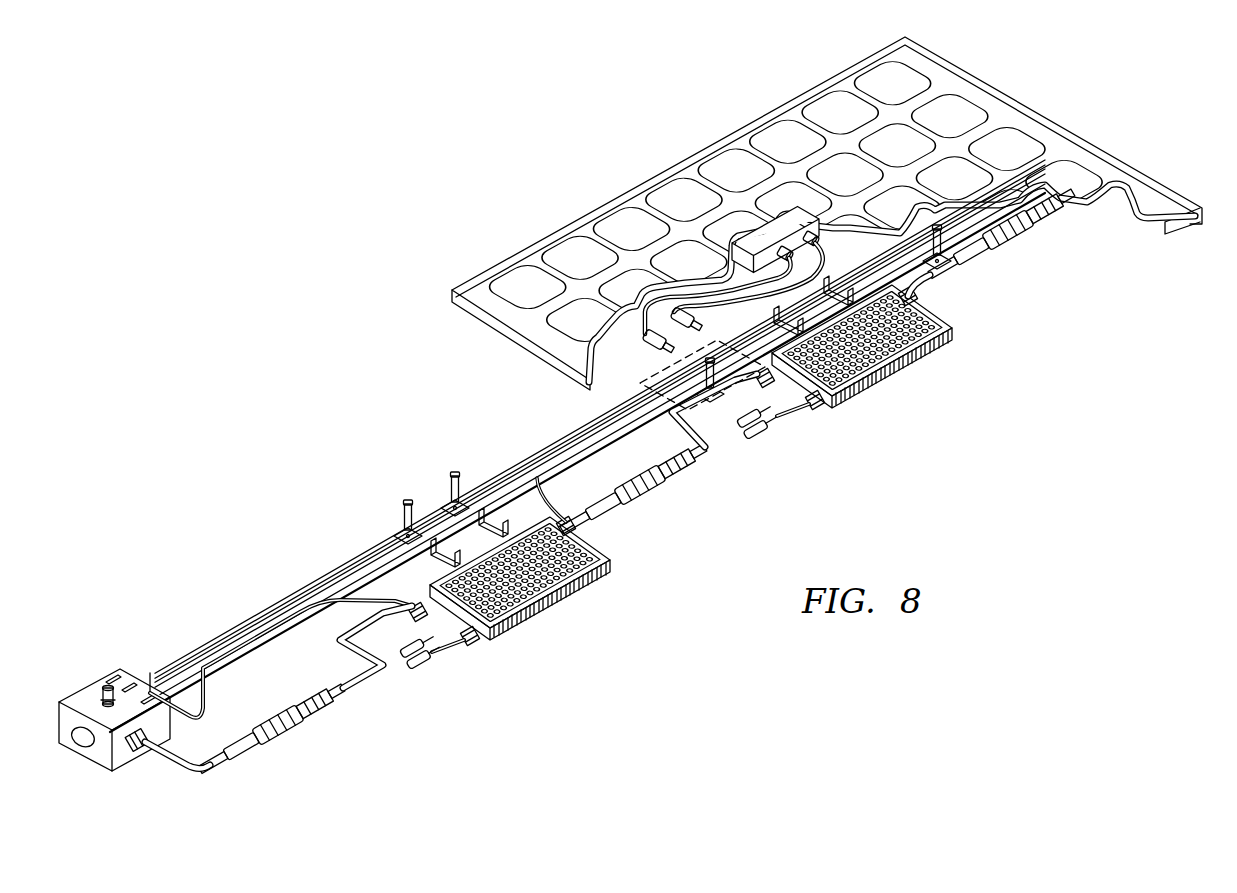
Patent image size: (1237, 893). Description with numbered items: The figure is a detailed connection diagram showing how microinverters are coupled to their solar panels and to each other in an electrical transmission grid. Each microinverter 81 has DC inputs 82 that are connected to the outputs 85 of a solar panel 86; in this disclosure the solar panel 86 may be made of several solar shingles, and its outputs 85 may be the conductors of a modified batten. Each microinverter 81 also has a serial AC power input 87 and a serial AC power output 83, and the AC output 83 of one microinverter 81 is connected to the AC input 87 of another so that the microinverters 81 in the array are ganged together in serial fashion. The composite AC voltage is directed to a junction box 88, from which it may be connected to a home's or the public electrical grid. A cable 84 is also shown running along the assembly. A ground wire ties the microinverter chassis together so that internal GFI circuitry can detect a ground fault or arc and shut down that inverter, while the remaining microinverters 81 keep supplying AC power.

The microinverter 81 is at (568, 614).
The DC inputs 82 is at (452, 646).
The serial AC power output 83 is at (366, 688).
The cable 84 is at (392, 590).
The outputs 85 is at (706, 275).
The solar panel 86 is at (998, 106).
The serial AC power input 87 is at (276, 735).
The junction box 88 is at (95, 766).